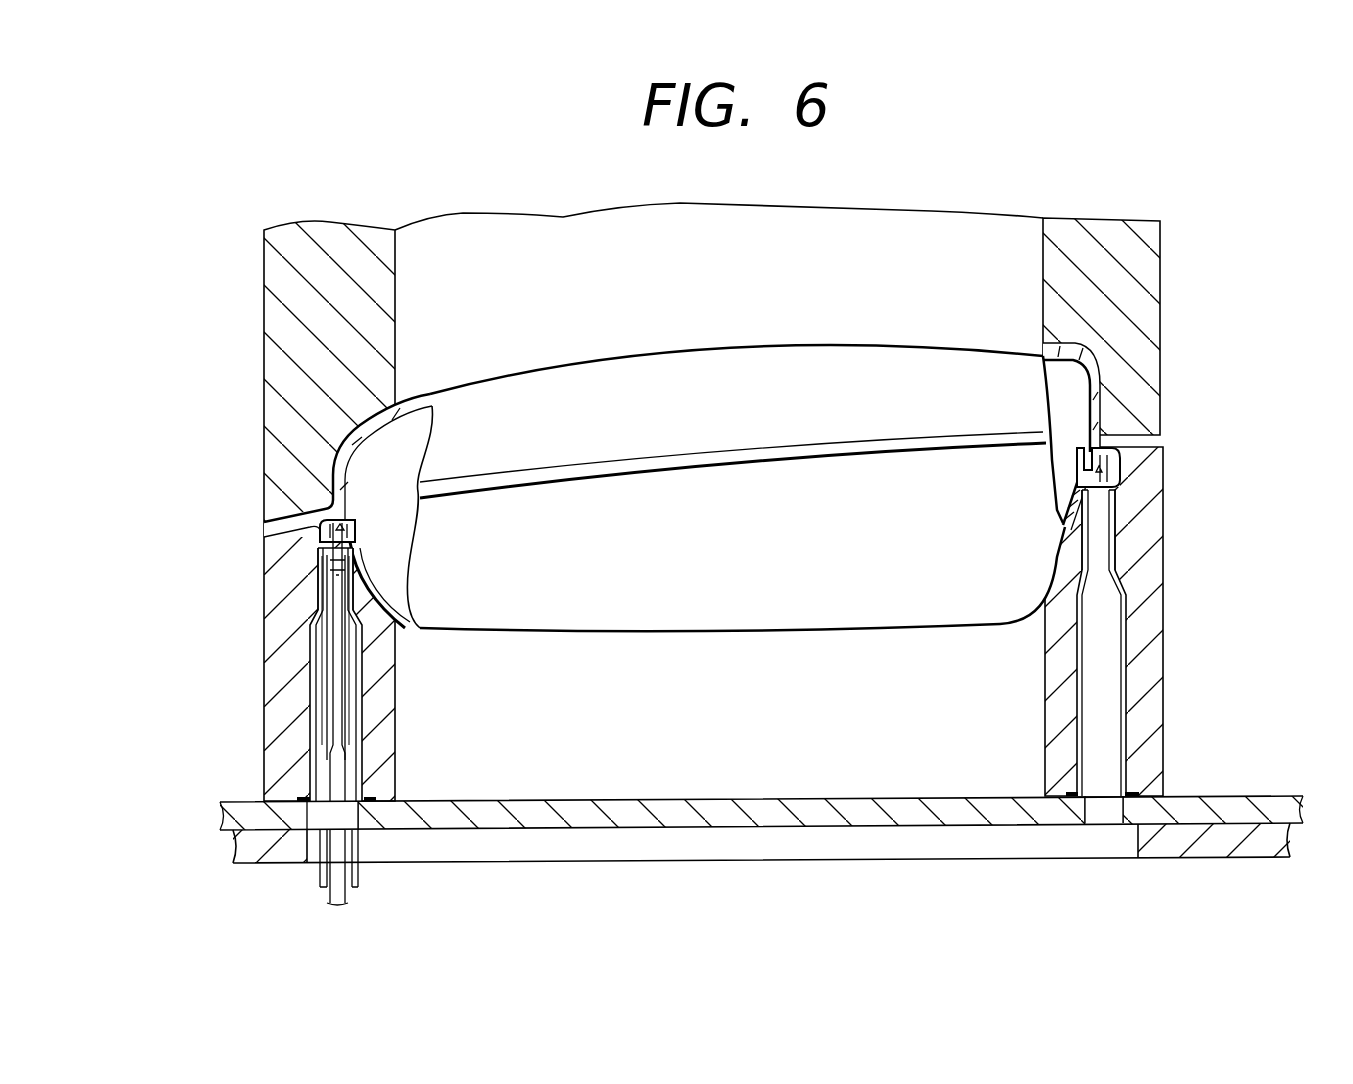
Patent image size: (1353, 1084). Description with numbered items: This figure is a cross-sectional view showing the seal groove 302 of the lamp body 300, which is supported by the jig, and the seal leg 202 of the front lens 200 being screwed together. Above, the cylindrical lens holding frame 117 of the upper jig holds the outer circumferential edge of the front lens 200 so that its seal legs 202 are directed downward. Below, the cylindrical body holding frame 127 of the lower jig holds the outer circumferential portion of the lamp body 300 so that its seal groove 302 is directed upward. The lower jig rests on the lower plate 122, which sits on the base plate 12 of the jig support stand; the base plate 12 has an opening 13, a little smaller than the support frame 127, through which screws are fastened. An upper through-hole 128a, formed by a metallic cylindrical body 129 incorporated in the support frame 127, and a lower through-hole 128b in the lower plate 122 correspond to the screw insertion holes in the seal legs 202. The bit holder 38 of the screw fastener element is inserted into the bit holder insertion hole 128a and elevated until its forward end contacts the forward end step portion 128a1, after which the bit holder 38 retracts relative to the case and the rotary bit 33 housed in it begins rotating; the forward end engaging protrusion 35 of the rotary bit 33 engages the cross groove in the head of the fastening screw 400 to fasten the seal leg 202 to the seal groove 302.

The lens holding frame 117 is at (264, 290).
The body holding frame 127 is at (275, 627).
The front lens 200 is at (665, 352).
The lamp body 300 is at (663, 634).
The fastening screw 400 is at (322, 548).
The seal leg 202 is at (1108, 467).
The seal groove 302 is at (1110, 495).
The metallic cylindrical body 129 is at (309, 692).
The forward end step portion 128a1 is at (1192, 523).
The upper through-hole 128a is at (317, 708).
The lower through-hole 128b is at (317, 798).
The bit holder 38 is at (313, 662).
The rotary bit 33 is at (414, 714).
The forward end engaging protrusion 35 is at (342, 710).
The lower plate 122 is at (1217, 802).
The base plate 12 is at (1242, 850).
The opening 13 is at (1122, 857).